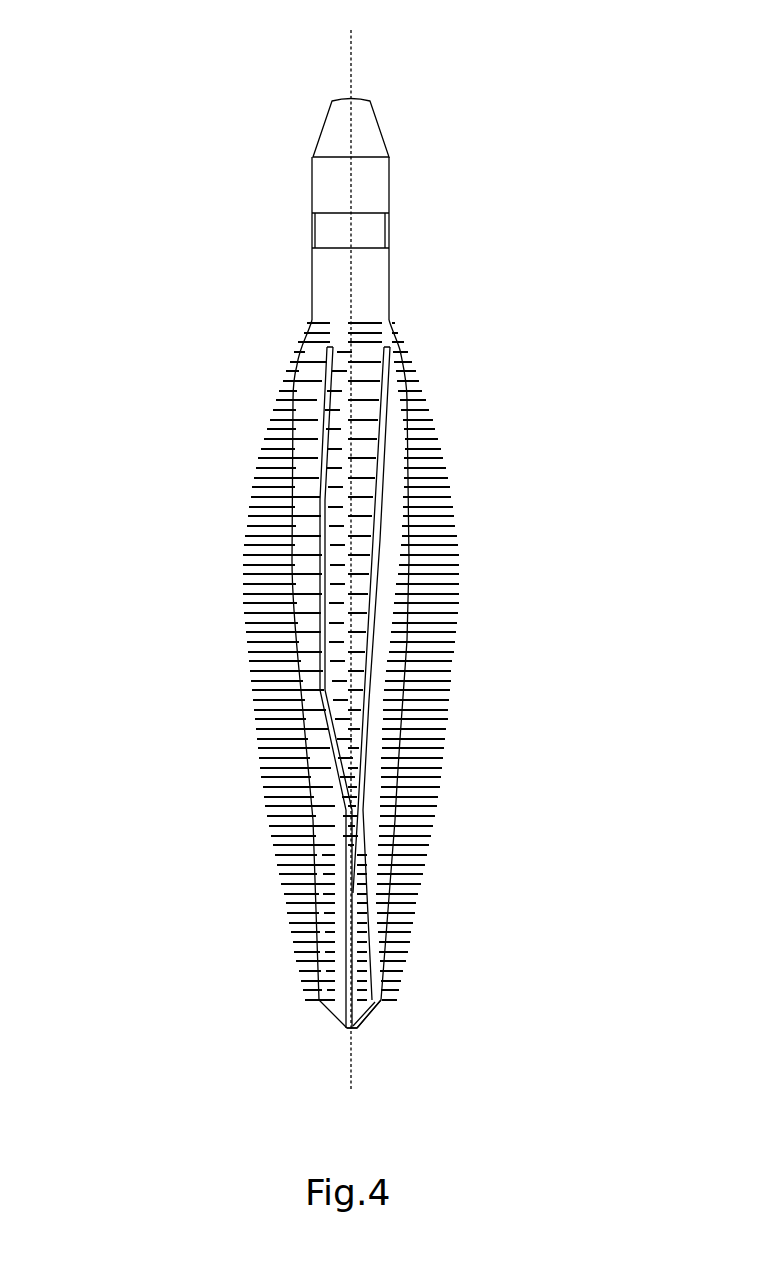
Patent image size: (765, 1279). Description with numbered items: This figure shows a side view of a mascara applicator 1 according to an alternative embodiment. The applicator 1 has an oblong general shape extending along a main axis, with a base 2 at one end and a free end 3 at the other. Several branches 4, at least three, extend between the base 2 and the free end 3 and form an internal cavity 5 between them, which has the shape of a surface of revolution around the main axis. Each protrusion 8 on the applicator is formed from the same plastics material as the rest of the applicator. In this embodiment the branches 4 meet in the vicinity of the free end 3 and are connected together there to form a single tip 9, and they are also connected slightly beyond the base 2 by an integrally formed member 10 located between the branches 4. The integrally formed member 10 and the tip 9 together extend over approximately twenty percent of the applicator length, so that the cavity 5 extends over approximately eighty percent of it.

The applicator 1 is at (155, 375).
The base 2 is at (373, 285).
The free end 3 is at (355, 1030).
The branches 4 is at (398, 500).
The cavity 5 is at (383, 644).
The protrusion 8 is at (413, 612).
The tip 9 is at (362, 1012).
The integrally formed member 10 is at (330, 334).